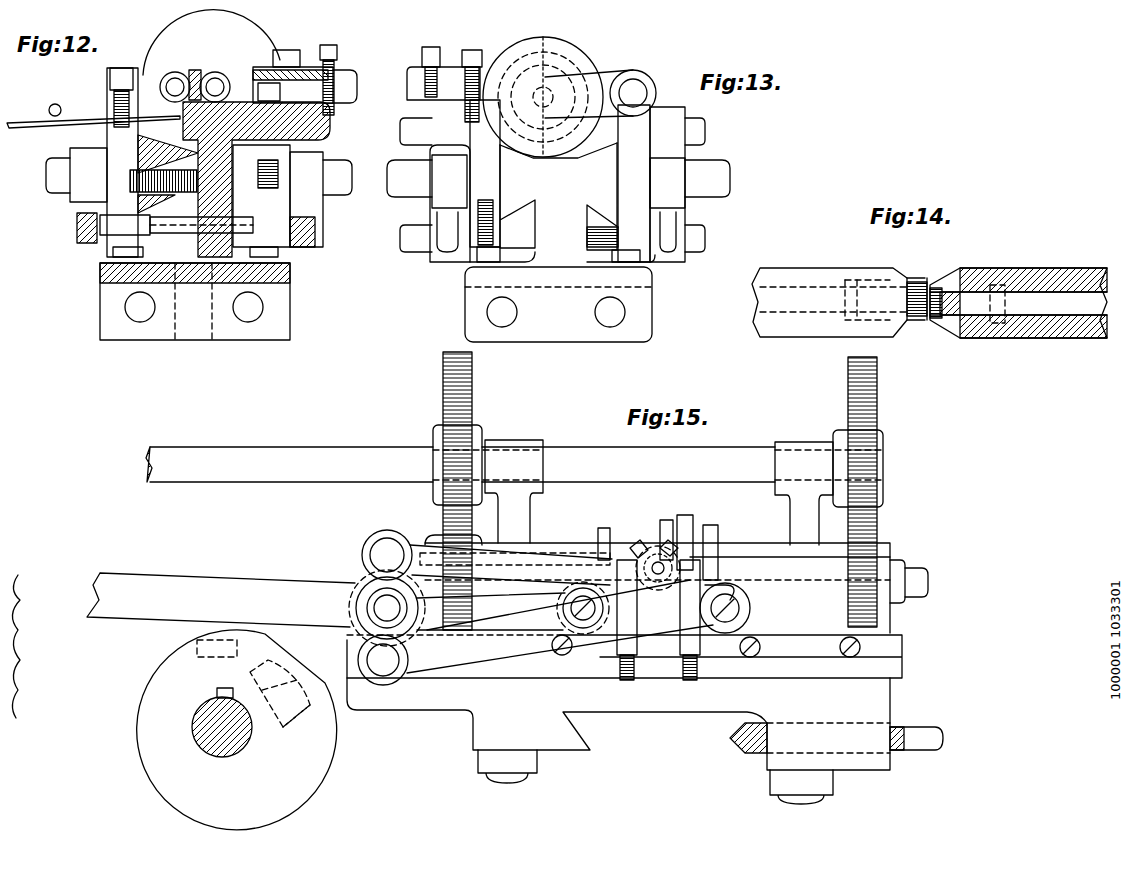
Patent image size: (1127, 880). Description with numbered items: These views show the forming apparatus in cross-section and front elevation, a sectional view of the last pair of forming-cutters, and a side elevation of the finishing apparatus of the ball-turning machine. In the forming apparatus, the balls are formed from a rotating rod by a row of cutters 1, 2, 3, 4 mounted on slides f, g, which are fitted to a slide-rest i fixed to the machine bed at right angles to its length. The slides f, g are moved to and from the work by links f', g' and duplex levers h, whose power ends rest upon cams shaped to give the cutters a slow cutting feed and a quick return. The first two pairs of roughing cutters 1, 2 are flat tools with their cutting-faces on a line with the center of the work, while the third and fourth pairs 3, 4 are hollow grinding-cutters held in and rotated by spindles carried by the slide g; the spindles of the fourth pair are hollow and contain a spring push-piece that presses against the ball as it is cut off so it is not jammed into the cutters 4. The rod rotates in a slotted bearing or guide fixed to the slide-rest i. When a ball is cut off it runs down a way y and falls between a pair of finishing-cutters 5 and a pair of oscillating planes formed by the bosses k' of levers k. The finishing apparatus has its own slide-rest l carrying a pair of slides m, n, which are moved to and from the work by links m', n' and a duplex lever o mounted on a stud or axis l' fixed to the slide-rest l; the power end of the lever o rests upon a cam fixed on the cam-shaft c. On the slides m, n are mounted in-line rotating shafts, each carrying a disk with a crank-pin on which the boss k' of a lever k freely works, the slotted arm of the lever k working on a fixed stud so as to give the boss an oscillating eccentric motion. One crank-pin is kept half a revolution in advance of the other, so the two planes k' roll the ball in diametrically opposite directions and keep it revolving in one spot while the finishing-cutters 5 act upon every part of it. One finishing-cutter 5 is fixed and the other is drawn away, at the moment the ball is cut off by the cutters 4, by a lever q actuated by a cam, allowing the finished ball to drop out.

In FIG. 12, the slide-rest i is at (215, 175).
In FIG. 13, the slide-rest i is at (560, 242).
In FIG. 12, the slide g is at (152, 162).
In FIG. 13, the slide g is at (631, 183).
In FIG. 12, the link g' is at (121, 175).
In FIG. 13, the link g' is at (667, 184).
In FIG. 12, the slide f is at (181, 232).
In FIG. 13, the slide f is at (485, 181).
In FIG. 12, the link f' is at (292, 196).
In FIG. 13, the link f' is at (450, 203).
In FIG. 13, the duplex lever h is at (560, 185).
In FIG. 12, the way y is at (93, 113).
In FIG. 15, the way y is at (649, 522).
In FIG. 12, the forming or roughing cutter 1 is at (344, 86).
In FIG. 13, the forming or roughing cutter 1 is at (444, 84).
In FIG. 12, the forming or roughing cutter 2 is at (266, 82).
In FIG. 12, the hollow grinding-cutter 3 is at (221, 72).
In FIG. 12, the hollow grinding-cutter 4 is at (181, 67).
In FIG. 14, the hollow grinding-cutter 4 is at (945, 268).
In FIG. 15, the finishing-cutter 5 is at (694, 556).
In FIG. 15, the cross-shaft p is at (514, 464).
In FIG. 15, the slide n is at (657, 536).
In FIG. 15, the link n' is at (487, 557).
In FIG. 15, the slide-rest l is at (645, 719).
In FIG. 15, the stud or axis l' is at (479, 609).
In FIG. 15, the lever k is at (660, 563).
In FIG. 15, the boss / oscillating plane k' is at (672, 549).
In FIG. 15, the slide m is at (491, 609).
In FIG. 15, the link m' is at (578, 626).
In FIG. 15, the duplex lever o is at (221, 600).
In FIG. 15, the lever q is at (458, 660).
In FIG. 15, the cam-shaft c is at (222, 729).